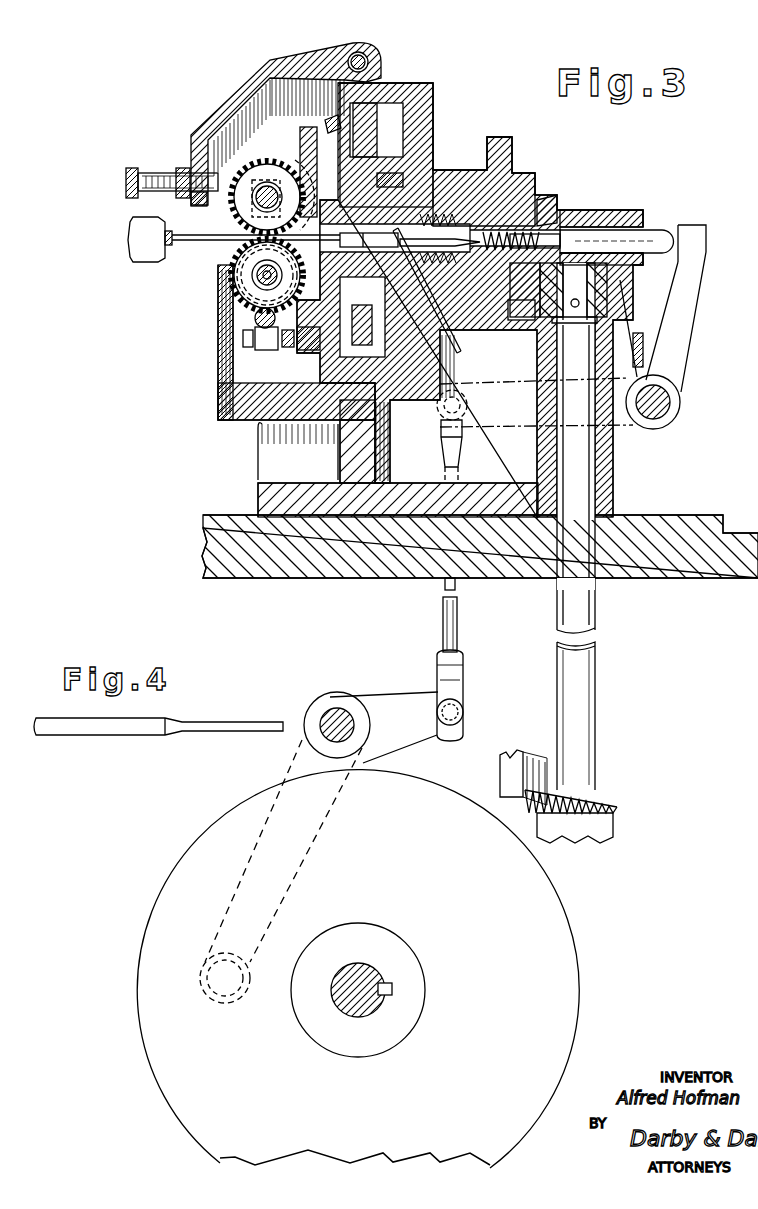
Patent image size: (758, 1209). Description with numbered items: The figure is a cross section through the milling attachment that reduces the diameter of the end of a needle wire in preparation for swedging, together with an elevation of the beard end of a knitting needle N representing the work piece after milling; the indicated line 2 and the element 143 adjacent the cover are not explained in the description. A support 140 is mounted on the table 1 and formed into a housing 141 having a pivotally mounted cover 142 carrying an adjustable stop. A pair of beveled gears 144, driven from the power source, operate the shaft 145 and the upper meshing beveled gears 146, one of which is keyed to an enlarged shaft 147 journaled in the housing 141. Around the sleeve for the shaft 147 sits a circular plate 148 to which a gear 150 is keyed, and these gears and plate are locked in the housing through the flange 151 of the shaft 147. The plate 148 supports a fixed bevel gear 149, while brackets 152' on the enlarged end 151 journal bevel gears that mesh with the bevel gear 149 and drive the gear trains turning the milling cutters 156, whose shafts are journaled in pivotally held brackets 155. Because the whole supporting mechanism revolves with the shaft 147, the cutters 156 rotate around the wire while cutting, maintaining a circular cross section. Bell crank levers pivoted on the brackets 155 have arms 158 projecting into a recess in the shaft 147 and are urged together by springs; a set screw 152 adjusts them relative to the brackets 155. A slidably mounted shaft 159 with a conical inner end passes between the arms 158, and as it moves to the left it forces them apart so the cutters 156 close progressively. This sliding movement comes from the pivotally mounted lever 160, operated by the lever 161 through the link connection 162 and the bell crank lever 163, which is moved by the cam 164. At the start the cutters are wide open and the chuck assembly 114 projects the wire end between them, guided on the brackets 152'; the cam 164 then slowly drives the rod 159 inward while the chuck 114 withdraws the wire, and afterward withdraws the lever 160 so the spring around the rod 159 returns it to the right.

In FIG. 3, the table 1 is at (265, 14).
In FIG. 3, the section line 2- 2 is at (378, 14).
In FIG. 3, the chuck assembly 114 is at (150, 262).
In FIG. 3, the support 140 is at (262, 447).
In FIG. 3, the housing 141 is at (258, 422).
In FIG. 3, the cover 142 is at (240, 88).
In FIG. 3, the bolt 143 is at (172, 173).
In FIG. 3, the beveled gears 144 is at (533, 752).
In FIG. 3, the shaft 145 is at (600, 652).
In FIG. 3, the upper beveled gears 146 is at (551, 209).
In FIG. 3, the enlarged shaft 147 is at (478, 207).
In FIG. 3, the circular plate 148 is at (362, 125).
In FIG. 3, the fixed bevel gear 149 is at (327, 357).
In FIG. 3, the gear 150 is at (420, 153).
In FIG. 3, the flange 151 is at (433, 133).
In FIG. 3, the set screw 152 is at (296, 354).
In FIG. 3, the brackets 152' is at (298, 136).
In FIG. 3, the pivotally held brackets 155 is at (263, 345).
In FIG. 3, the milling cutters 156 is at (257, 173).
In FIG. 3, the arms 158 is at (476, 293).
In FIG. 3, the slidably mounted shaft 159 is at (650, 238).
In FIG. 3, the lever 160 is at (684, 326).
In FIG. 3, the lever 161 is at (527, 427).
In FIG. 3, the link connection 162 is at (460, 620).
In FIG. 3, the bell crank lever 163 is at (370, 698).
In FIG. 3, the cam 164 is at (557, 922).
In FIG. 3, the needle bar N is at (205, 248).
In FIG. 4, the needle bar N is at (97, 727).